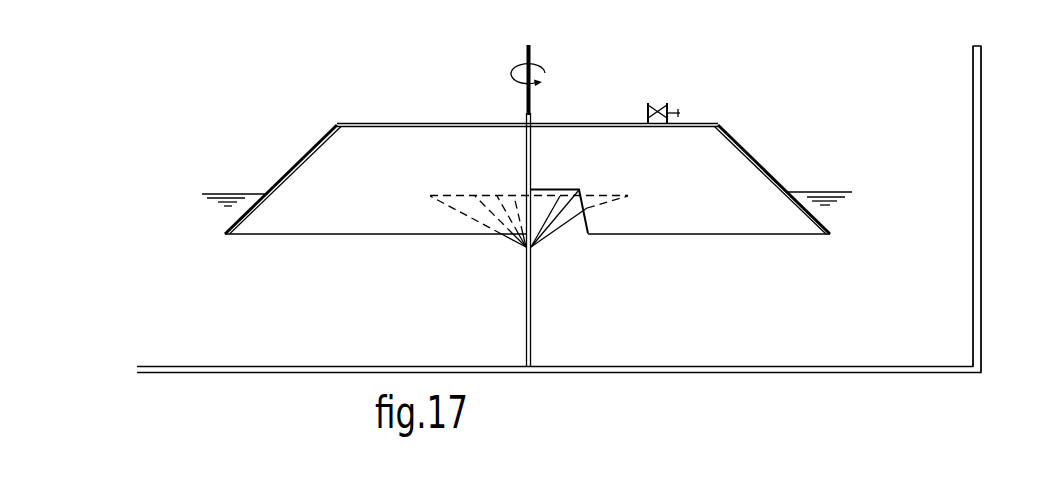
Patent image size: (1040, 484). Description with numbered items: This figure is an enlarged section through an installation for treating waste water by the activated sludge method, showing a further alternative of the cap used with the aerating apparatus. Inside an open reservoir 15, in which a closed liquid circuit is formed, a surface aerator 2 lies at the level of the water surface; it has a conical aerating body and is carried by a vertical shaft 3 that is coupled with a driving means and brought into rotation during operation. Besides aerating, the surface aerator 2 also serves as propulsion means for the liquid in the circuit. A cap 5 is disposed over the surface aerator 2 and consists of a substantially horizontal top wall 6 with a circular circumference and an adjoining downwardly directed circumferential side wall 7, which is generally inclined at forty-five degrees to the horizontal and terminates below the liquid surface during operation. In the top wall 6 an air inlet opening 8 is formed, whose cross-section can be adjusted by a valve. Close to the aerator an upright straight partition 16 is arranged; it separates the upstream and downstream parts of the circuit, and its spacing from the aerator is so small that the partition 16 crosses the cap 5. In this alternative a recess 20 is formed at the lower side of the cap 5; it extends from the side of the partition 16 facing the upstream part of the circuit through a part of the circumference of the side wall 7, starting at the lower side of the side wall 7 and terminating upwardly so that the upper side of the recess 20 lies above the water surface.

The surface aerator 2 is at (563, 228).
The vertical shaft 3 is at (530, 50).
The cap 5 is at (334, 117).
The top wall 6 is at (568, 123).
The side wall 7 is at (753, 155).
The air inlet opening 8 is at (655, 124).
The open reservoir 15 is at (980, 133).
The partition 16 is at (526, 288).
The recess 20 is at (585, 209).